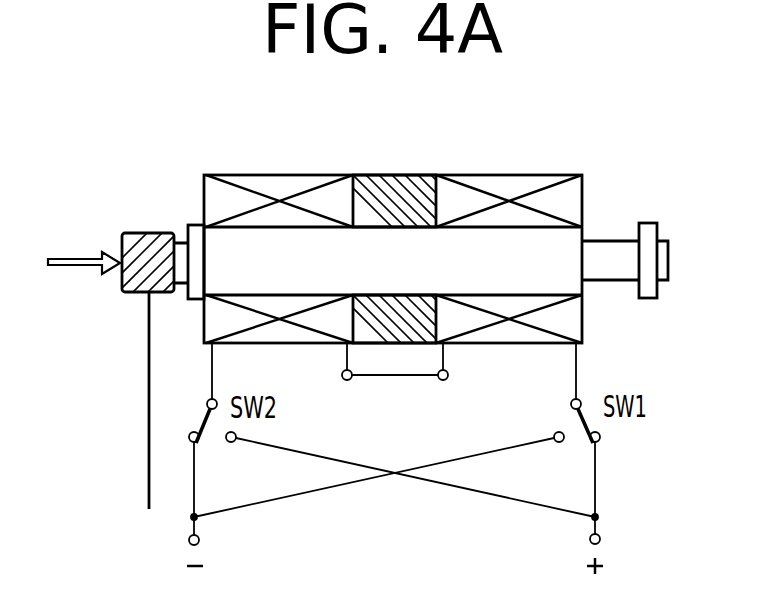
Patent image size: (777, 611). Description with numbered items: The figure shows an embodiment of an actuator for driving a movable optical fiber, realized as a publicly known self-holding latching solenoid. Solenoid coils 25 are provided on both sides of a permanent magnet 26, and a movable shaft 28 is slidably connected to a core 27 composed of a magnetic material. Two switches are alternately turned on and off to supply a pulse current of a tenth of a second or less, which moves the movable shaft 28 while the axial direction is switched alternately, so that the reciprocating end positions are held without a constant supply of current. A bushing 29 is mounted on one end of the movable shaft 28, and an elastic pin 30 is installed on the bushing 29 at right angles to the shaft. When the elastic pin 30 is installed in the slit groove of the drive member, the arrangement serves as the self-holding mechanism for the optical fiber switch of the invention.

The solenoid coils 25 is at (268, 190).
The permanent magnet 26 is at (400, 182).
The core 27 is at (512, 260).
The movable shaft 28 is at (622, 250).
The bushing 29 is at (145, 237).
The elastic pin 30 is at (149, 413).